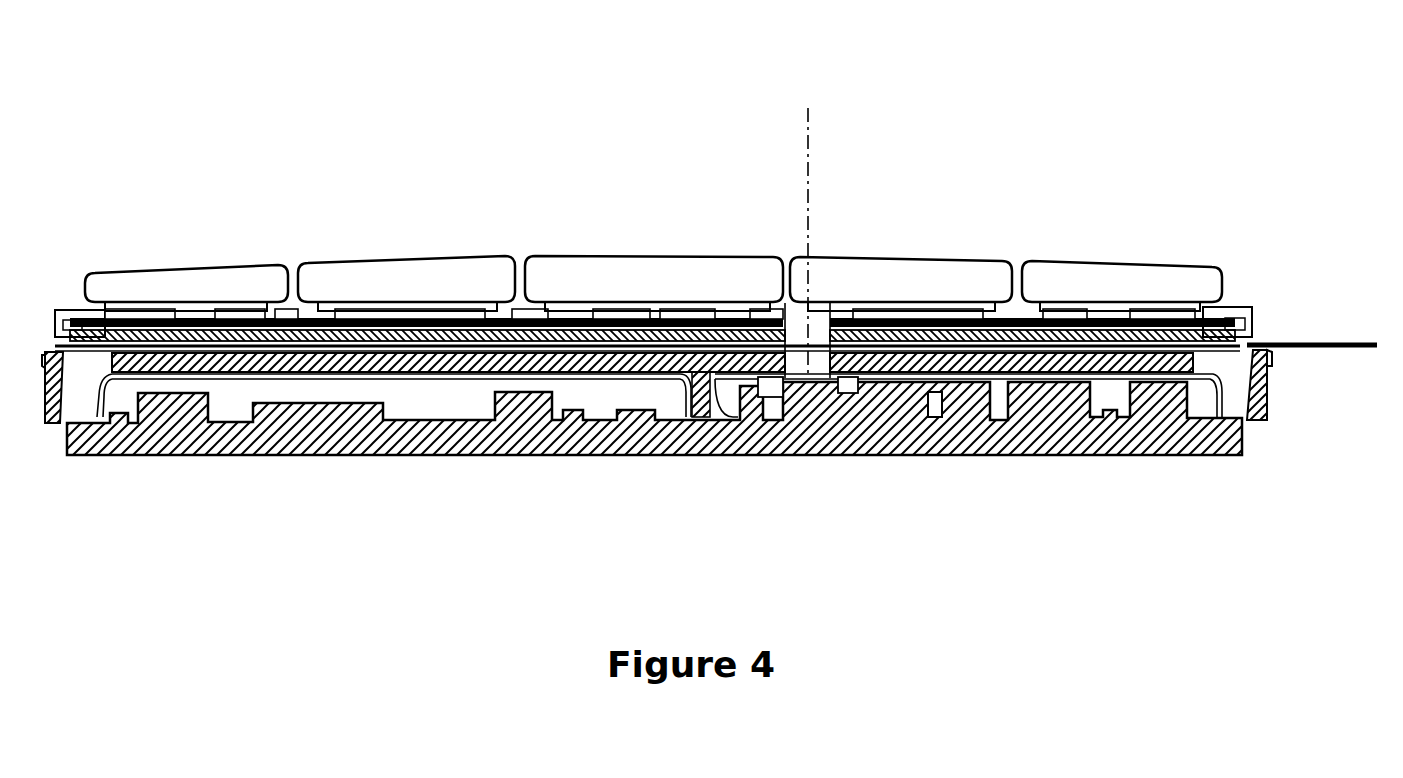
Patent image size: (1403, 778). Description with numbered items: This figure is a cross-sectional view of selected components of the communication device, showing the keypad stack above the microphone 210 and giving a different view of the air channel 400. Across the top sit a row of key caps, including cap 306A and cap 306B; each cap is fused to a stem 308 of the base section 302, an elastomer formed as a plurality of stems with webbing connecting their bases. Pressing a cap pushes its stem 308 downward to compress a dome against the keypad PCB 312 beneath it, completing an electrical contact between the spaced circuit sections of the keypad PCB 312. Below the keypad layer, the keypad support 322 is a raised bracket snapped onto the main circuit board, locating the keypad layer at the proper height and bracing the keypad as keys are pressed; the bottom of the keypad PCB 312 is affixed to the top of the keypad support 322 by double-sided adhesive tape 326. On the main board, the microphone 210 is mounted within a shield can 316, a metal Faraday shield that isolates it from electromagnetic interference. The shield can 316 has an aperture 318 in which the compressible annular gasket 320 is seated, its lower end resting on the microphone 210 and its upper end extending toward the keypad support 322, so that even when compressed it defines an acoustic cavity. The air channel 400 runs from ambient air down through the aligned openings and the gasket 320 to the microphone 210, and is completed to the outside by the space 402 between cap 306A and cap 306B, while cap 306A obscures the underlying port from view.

The microphone 210 is at (813, 393).
The base section 302 is at (887, 305).
The cap 306A is at (925, 258).
The cap 306B is at (653, 262).
The stem 308 is at (1203, 305).
The keypad PCB 312 is at (658, 312).
The shield can 316 is at (612, 312).
The aperture 318 is at (1187, 385).
The gasket 320 is at (845, 390).
The keypad support 322 is at (977, 375).
The double-sided adhesive tape 326 is at (740, 418).
The air channel 400 is at (815, 300).
The space 402 is at (786, 290).